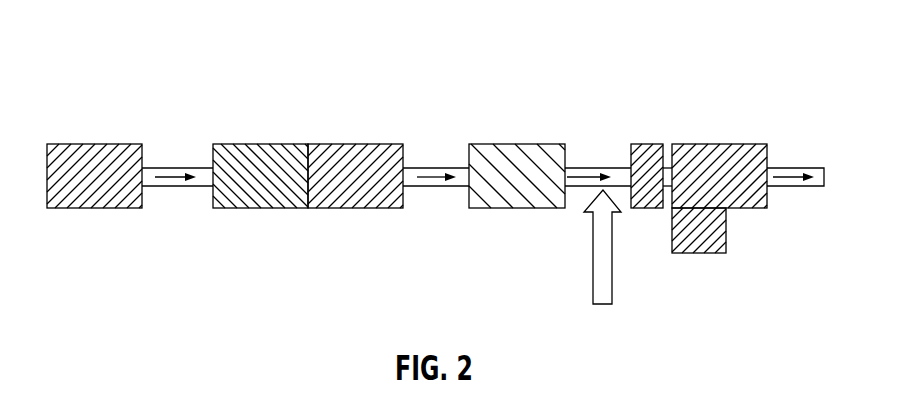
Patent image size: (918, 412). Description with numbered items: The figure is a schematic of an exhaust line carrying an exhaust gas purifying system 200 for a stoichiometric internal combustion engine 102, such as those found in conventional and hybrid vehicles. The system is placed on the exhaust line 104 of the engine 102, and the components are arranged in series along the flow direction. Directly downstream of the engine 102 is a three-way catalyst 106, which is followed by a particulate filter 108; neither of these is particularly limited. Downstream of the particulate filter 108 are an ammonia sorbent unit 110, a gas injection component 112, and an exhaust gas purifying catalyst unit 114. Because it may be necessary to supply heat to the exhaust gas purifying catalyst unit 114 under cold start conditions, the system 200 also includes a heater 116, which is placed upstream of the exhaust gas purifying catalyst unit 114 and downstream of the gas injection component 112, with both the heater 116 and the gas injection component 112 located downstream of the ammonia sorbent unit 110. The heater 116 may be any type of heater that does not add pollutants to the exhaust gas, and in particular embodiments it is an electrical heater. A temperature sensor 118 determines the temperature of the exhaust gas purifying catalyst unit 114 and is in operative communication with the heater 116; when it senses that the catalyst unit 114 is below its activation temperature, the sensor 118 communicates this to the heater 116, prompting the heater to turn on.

The exhaust gas purifying system 200 is at (129, 37).
The internal combustion engine 102 is at (110, 144).
The exhaust line 104 is at (177, 202).
The three-way catalyst 106 is at (253, 144).
The particulate filter 108 is at (345, 144).
The ammonia sorbent unit 110 is at (500, 144).
The gas injection component 112 is at (593, 264).
The exhaust gas purifying catalyst unit 114 is at (700, 144).
The heater 116 is at (645, 144).
The temperature sensor 118 is at (728, 233).